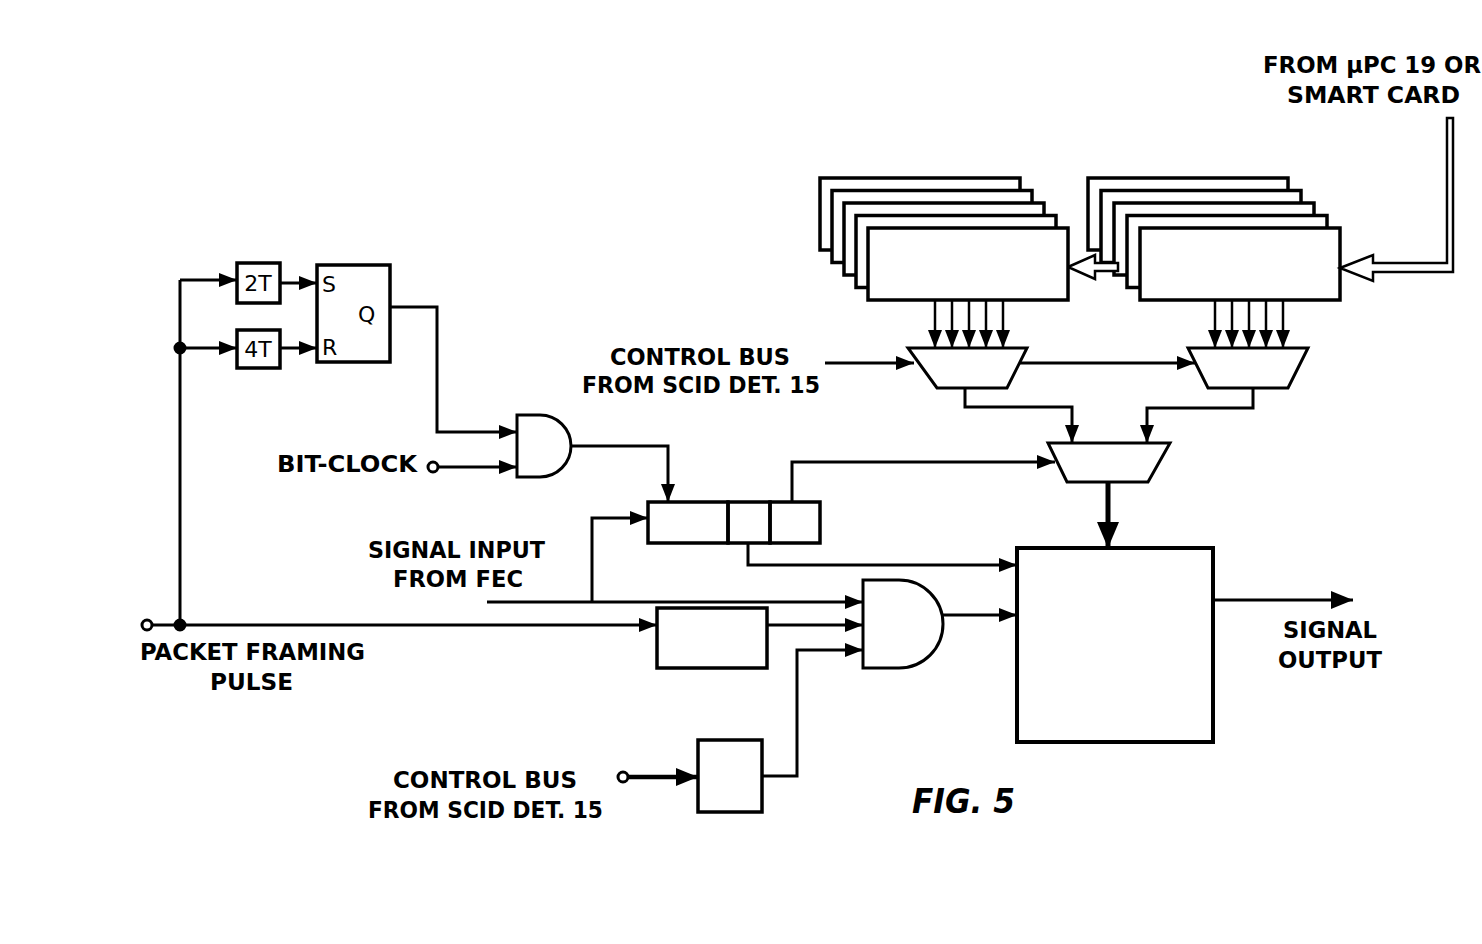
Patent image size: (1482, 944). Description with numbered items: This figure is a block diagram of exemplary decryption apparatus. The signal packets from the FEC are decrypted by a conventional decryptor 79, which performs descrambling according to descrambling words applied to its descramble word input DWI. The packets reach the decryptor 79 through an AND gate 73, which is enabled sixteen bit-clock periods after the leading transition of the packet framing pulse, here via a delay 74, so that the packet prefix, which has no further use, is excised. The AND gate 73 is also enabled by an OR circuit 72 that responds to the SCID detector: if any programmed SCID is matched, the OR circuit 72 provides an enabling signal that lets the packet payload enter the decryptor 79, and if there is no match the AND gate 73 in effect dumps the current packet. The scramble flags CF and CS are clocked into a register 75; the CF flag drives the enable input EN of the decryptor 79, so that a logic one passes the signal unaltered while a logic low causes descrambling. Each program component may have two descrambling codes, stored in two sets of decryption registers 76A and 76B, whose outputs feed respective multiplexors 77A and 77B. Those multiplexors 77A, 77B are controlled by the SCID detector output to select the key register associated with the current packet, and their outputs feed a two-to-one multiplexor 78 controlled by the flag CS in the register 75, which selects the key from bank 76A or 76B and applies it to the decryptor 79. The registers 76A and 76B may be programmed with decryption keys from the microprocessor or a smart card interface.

The OR circuit 72 is at (752, 813).
The AND gate 73 is at (907, 668).
The 16T delay 74 is at (690, 670).
The register 75 is at (725, 502).
The decryption registers 76A is at (822, 257).
The decryption registers 76B is at (1382, 190).
The multiplexor 77A is at (937, 382).
The multiplexor 77B is at (1298, 370).
The two-to-one multiplexor 78 is at (1163, 455).
The decryptor 79 is at (1213, 577).